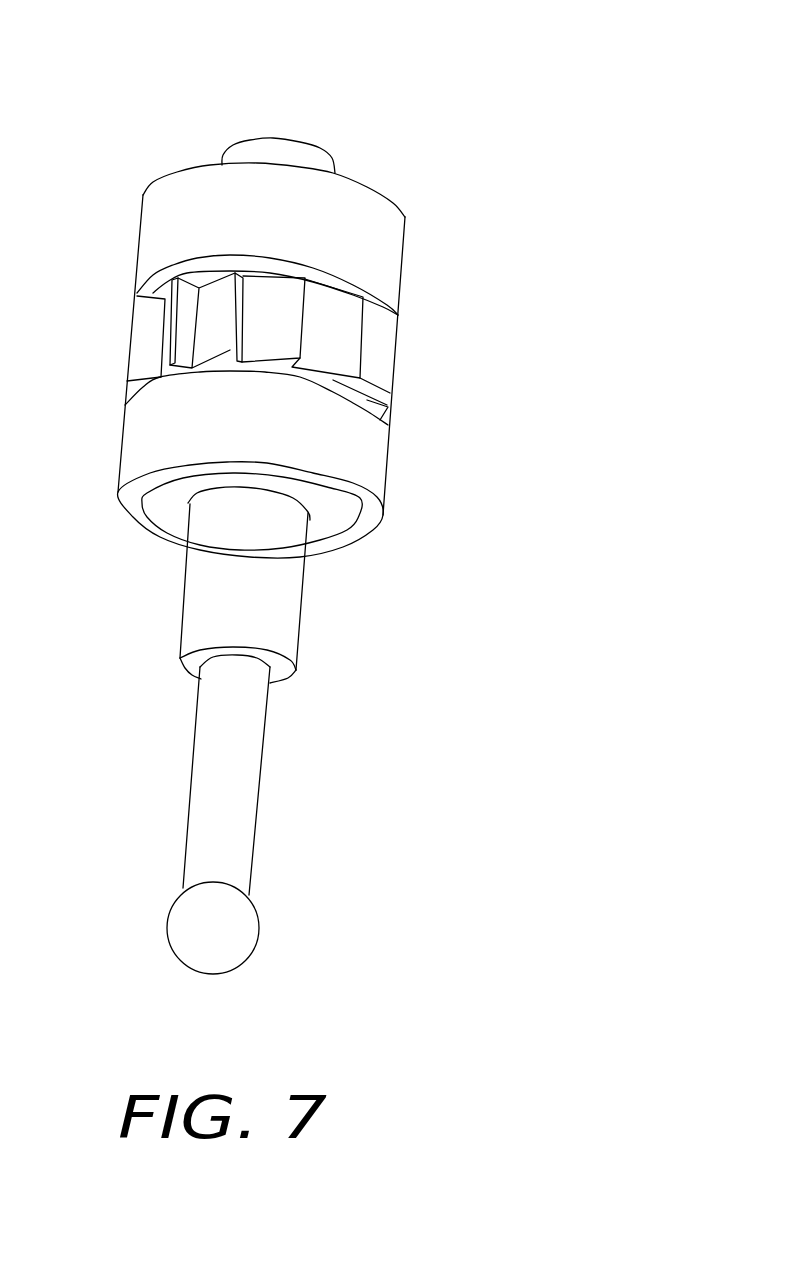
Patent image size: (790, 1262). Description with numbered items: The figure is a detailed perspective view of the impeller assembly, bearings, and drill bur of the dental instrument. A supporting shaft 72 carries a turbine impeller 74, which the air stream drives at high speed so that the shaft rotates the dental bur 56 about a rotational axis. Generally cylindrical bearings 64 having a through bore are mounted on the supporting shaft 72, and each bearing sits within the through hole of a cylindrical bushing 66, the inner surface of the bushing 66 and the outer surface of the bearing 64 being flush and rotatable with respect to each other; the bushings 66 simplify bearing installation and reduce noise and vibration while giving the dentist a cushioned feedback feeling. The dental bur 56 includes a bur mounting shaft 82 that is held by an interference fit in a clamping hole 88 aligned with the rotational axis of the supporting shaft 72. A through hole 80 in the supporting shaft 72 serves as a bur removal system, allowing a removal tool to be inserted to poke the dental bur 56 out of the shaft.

The dental bur 56 is at (283, 938).
The bearings 64 is at (202, 282).
The bushings 66 is at (385, 232).
The supporting shaft 72 is at (227, 592).
The turbine impeller 74 is at (280, 315).
The through hole 80 is at (292, 116).
The bur mounting shaft 82 is at (240, 808).
The clamping hole 88 is at (186, 668).